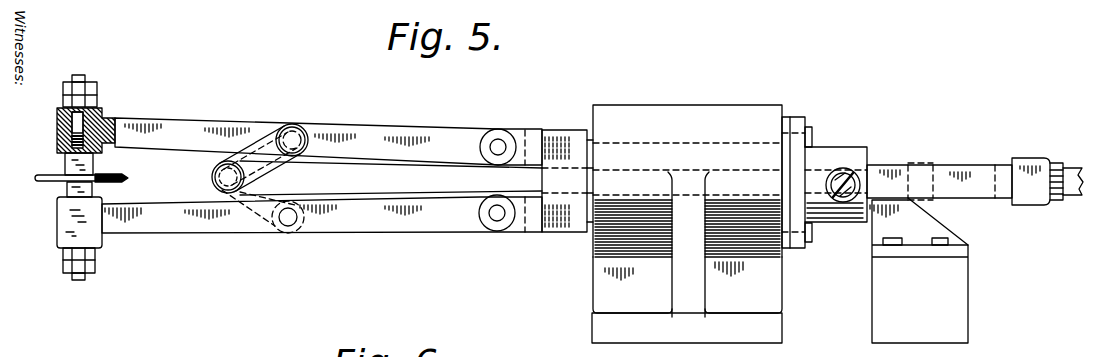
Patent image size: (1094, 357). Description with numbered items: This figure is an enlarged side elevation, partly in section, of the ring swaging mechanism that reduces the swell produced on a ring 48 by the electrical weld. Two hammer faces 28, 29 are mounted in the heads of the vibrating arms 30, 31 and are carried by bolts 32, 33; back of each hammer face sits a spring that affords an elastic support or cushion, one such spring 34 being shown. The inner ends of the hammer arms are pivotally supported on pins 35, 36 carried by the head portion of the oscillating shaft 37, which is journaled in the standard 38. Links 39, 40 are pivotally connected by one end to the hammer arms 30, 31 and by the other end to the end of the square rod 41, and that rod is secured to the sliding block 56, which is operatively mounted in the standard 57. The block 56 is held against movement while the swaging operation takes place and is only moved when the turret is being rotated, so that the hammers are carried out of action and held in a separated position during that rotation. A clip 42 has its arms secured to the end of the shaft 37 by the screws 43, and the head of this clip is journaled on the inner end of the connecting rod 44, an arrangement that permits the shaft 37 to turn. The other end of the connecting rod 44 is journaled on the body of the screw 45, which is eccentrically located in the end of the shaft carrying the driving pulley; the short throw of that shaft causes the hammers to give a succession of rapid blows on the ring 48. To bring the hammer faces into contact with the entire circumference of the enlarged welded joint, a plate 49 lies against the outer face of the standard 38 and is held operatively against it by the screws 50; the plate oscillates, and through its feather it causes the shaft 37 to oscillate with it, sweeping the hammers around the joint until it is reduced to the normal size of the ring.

The hammer face 28 is at (65, 161).
The hammer face 29 is at (67, 192).
The vibrating arm 30 is at (204, 121).
The vibrating arm 31 is at (216, 236).
The bolt 32 is at (85, 78).
The bolt 33 is at (81, 281).
The spring 34 is at (60, 135).
The pin 35 is at (500, 143).
The pin 36 is at (498, 221).
The oscillating shaft 37 is at (843, 147).
The standard 38 is at (687, 224).
The link 39 is at (268, 138).
The link 40 is at (295, 191).
The square rod 41 is at (509, 180).
The clip 42 is at (955, 166).
The screw 43 is at (855, 172).
The connecting rod 44 is at (1072, 198).
The screw 45 is at (567, 181).
The ring 48 is at (128, 178).
The plate 49 is at (790, 117).
The screw 50 is at (811, 130).
The sliding block 56 is at (940, 226).
The standard 57 is at (919, 271).